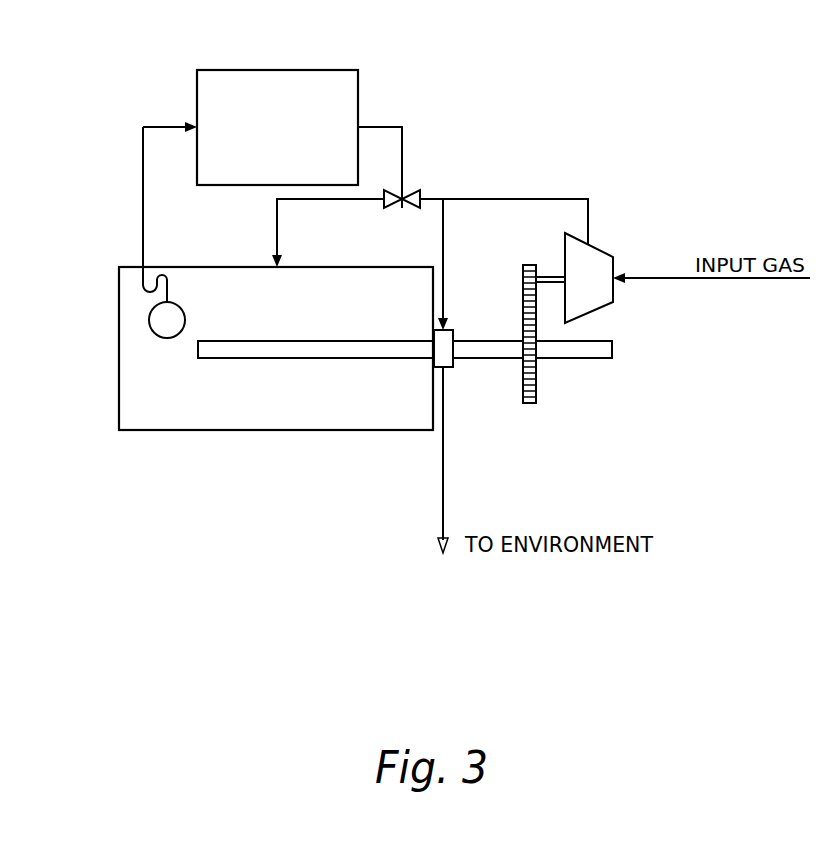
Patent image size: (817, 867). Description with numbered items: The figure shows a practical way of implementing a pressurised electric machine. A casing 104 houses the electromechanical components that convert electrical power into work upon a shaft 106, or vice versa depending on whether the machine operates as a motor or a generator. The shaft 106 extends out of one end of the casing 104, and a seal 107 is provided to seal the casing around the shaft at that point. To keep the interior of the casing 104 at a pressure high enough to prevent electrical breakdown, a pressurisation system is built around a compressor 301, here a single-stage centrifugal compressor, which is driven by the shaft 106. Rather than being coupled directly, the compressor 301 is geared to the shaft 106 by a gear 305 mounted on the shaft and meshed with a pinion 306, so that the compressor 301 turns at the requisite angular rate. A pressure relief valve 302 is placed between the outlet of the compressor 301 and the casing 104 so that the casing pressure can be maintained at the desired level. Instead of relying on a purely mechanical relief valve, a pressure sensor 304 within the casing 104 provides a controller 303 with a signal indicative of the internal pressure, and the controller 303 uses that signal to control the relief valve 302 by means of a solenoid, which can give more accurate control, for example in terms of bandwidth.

The casing 104 is at (119, 410).
The shaft 106 is at (609, 350).
The seal 107 is at (437, 331).
The compressor 301 is at (605, 258).
The pressure relief valve 302 is at (421, 189).
The controller 303 is at (350, 72).
The pressure sensor 304 is at (183, 310).
The gear 305 is at (538, 345).
The pinion 306 is at (527, 266).